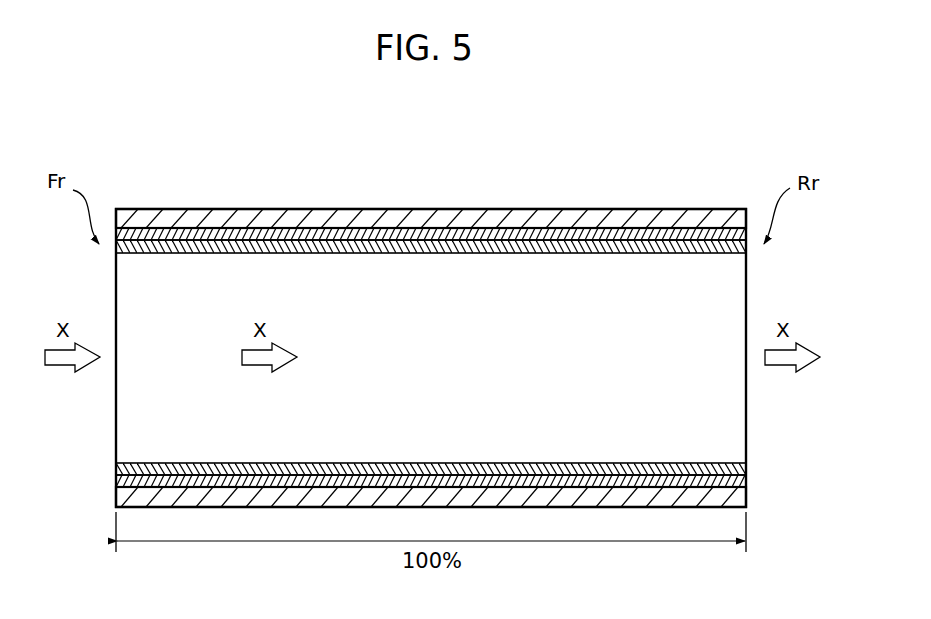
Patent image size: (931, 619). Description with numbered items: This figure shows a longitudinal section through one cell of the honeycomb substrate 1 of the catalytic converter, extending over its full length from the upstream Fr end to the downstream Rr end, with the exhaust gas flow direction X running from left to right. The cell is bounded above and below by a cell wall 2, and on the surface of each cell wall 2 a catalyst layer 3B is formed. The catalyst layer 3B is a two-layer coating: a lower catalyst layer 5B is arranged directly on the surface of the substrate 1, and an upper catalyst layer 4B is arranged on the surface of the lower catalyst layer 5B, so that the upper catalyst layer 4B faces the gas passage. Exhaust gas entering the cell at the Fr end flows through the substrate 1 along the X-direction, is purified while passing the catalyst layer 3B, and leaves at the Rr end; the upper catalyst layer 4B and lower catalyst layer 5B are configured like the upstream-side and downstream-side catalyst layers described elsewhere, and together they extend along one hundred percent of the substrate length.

The substrate 1 is at (406, 305).
The cell wall 2 is at (226, 217).
The catalyst layer 3B is at (431, 295).
The upper catalyst layer 4B is at (488, 139).
The lower catalyst layer 5B is at (502, 235).